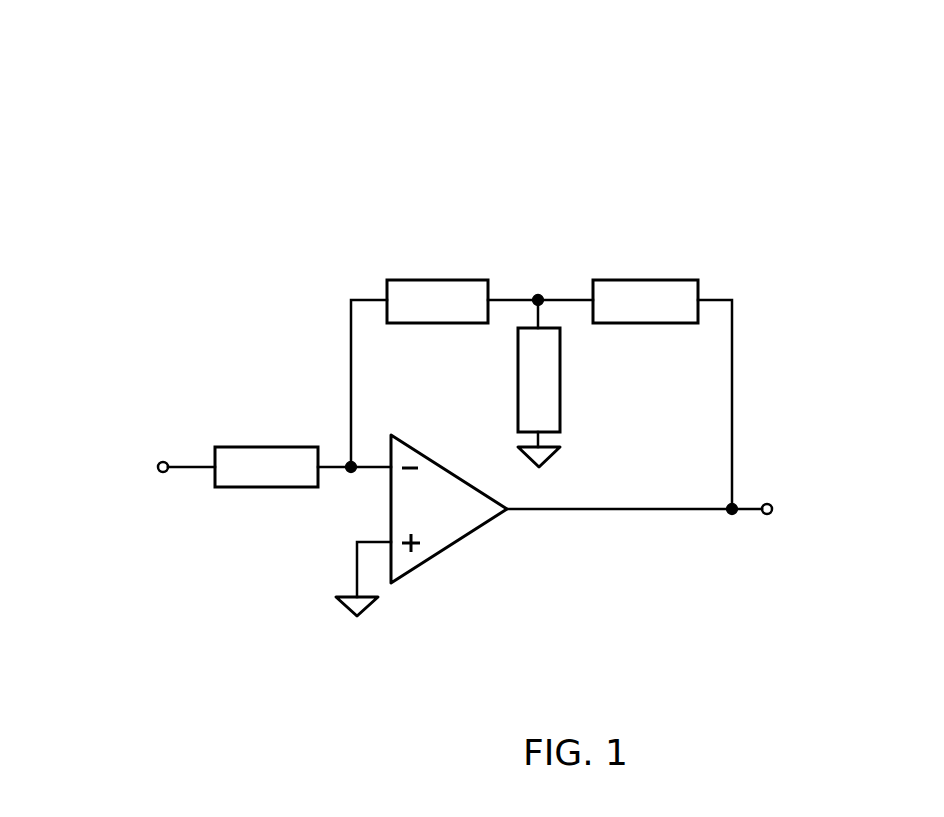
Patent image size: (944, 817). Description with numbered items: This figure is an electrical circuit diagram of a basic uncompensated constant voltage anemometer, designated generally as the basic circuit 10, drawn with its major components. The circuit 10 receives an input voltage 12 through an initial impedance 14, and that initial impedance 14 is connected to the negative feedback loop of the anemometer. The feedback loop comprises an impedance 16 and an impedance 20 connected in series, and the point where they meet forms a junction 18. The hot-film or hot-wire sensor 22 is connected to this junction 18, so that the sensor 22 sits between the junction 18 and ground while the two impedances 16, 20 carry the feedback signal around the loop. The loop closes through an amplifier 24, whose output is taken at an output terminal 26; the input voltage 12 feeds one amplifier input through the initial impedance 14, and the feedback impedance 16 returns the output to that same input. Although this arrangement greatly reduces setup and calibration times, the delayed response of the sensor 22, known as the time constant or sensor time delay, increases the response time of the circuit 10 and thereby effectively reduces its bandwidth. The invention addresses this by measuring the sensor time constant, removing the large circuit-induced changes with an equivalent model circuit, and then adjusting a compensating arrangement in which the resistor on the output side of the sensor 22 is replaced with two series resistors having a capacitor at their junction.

The basic uncompensated constant voltage anemometer circuit 10 is at (465, 316).
The input voltage 12 is at (109, 427).
The initial impedance 14 is at (255, 407).
The impedance 16 is at (403, 251).
The junction 18 is at (561, 242).
The impedance 20 is at (667, 250).
The hot-film or hot-wire sensor 22 is at (607, 395).
The operational amplifier 24 is at (463, 519).
The output terminal (V_S) 26 is at (834, 482).